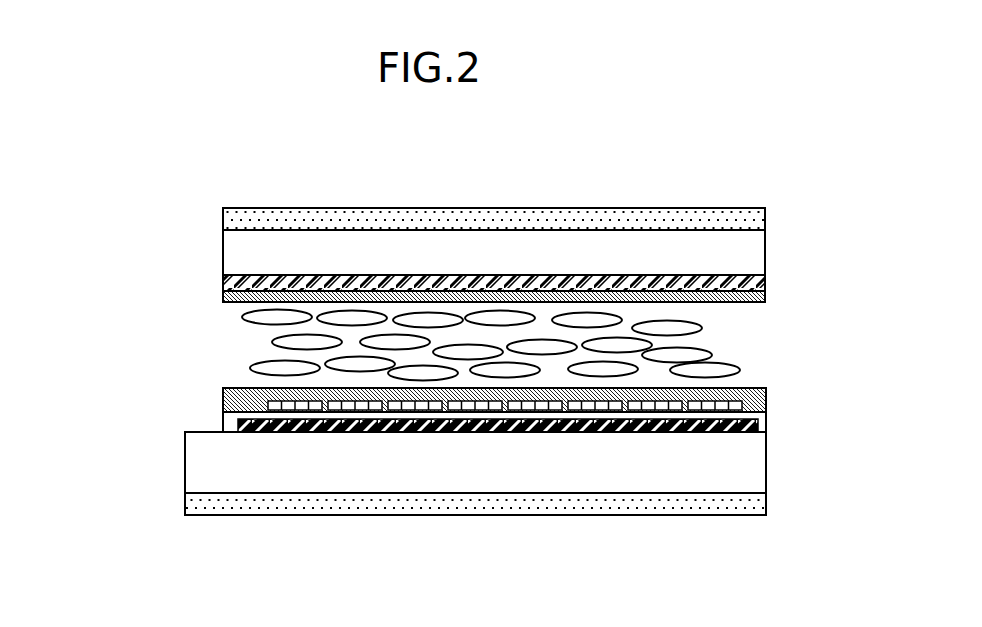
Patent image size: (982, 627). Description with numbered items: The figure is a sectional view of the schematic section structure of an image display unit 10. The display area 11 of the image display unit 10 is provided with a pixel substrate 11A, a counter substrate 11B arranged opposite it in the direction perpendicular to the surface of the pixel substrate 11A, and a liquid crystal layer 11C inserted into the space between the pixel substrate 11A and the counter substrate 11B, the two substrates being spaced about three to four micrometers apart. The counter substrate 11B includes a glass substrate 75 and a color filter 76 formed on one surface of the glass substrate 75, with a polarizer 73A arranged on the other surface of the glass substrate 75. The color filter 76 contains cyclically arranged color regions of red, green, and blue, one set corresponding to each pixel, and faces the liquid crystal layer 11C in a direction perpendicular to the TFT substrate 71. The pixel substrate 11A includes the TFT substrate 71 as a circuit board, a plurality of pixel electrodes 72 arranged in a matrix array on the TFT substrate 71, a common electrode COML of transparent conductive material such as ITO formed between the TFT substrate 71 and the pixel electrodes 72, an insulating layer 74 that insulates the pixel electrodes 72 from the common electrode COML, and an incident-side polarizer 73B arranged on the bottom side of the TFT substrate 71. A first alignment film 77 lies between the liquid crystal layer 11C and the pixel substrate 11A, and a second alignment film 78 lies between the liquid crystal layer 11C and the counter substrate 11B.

The image display unit 10 is at (672, 184).
The display area 11 is at (491, 524).
The pixel substrate 11A is at (92, 397).
The counter substrate 11B is at (128, 212).
The liquid crystal layer 11C is at (214, 356).
The TFT substrate 71 is at (192, 476).
The pixel electrodes 72 is at (223, 405).
The polarizer 73A is at (223, 218).
The incident-side polarizer 73B is at (185, 503).
The insulating layer 74 is at (758, 422).
The glass substrate 75 is at (223, 251).
The color filter 76 is at (223, 283).
The first alignment film 77 is at (766, 396).
The second alignment film 78 is at (765, 300).
The common electrode COML is at (238, 425).